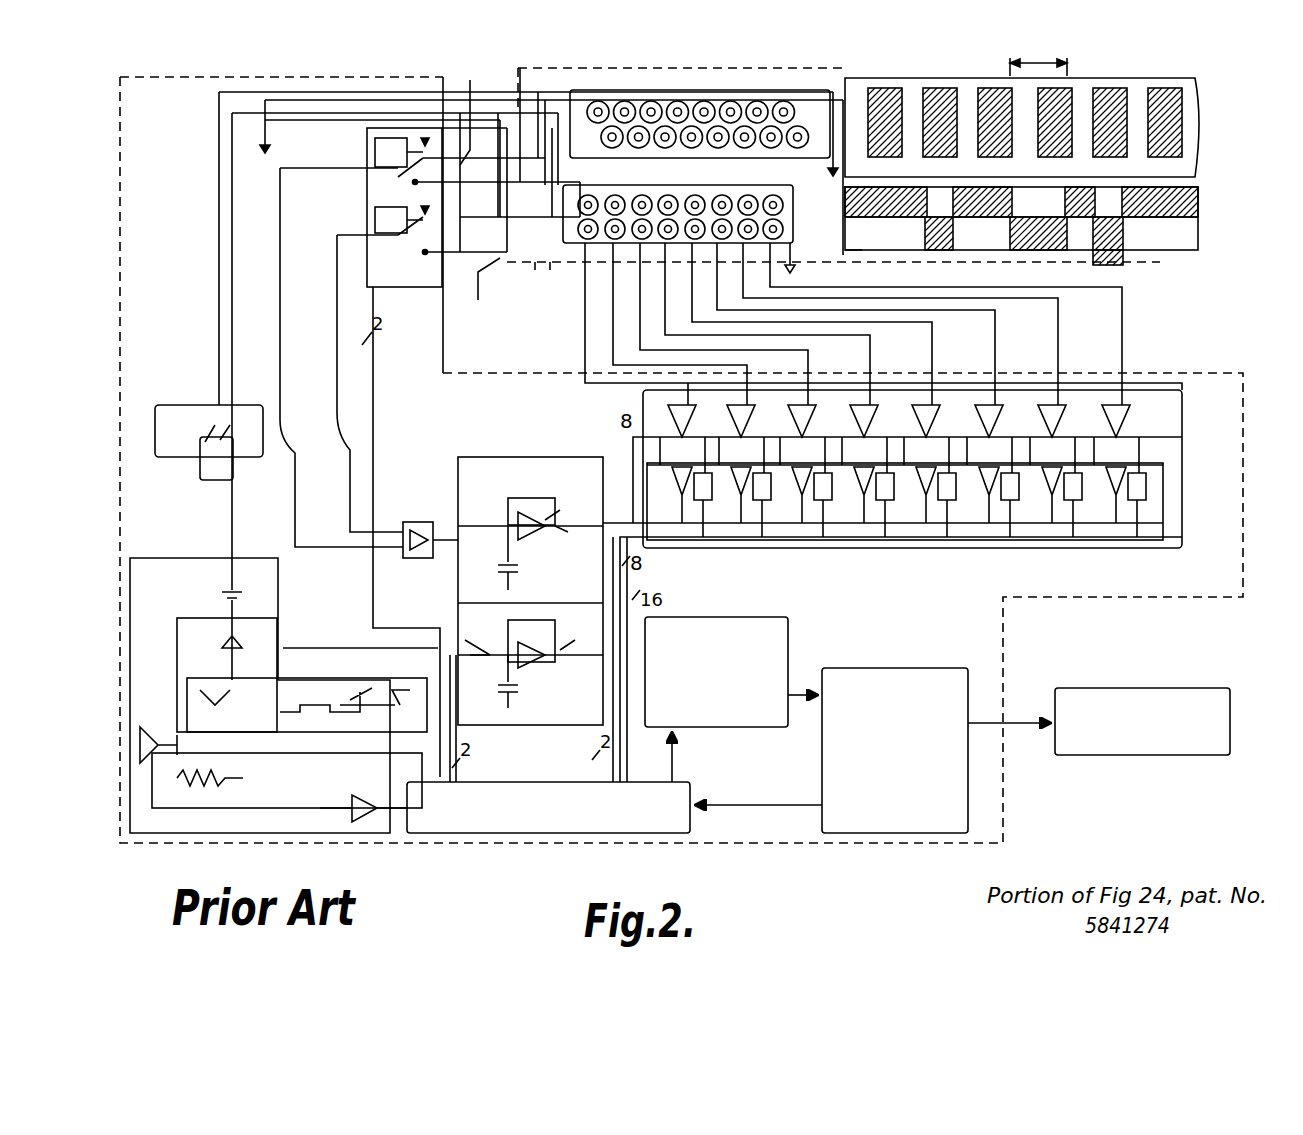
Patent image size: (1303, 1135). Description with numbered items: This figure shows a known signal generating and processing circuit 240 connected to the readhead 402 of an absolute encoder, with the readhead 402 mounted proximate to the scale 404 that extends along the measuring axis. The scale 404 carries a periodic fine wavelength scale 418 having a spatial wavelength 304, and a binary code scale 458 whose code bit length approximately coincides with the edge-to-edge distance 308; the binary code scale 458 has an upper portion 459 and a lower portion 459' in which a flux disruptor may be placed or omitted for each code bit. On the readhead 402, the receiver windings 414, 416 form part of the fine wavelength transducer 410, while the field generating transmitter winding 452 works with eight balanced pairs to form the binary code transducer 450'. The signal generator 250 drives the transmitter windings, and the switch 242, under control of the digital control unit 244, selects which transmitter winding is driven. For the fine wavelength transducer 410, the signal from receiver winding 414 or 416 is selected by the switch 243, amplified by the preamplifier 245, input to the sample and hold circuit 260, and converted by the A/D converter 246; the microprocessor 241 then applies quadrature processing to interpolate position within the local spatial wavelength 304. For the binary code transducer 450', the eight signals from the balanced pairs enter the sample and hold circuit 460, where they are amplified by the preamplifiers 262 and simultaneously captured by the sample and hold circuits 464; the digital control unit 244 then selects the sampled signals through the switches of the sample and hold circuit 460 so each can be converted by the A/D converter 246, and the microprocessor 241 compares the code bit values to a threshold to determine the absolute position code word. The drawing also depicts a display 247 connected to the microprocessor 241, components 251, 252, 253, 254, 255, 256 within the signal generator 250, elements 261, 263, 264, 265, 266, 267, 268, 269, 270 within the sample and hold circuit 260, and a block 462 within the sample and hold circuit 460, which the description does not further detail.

The signal generating and processing circuit 240 is at (1003, 600).
The microprocessor 241 is at (880, 668).
The switch 242 is at (190, 405).
The switch 243 is at (367, 158).
The digital control unit 244 is at (700, 800).
The preamplifier 245 is at (415, 522).
The A/D converter 246 is at (716, 617).
The display 247 is at (1125, 688).
The signal generator 250 is at (185, 558).
The battery 251 is at (222, 595).
The diode 252 is at (177, 645).
The resistor 253 is at (243, 778).
The diode 254 is at (172, 740).
The transistor switch 255 is at (270, 690).
The amplifier 256 is at (362, 795).
The sample and hold circuit 260 is at (555, 457).
The reference circuit 261 is at (508, 457).
The preamplifiers 262 is at (508, 512).
The capacitor 263 is at (520, 570).
The amplifier output 264 is at (545, 530).
The amplifier 265 is at (562, 512).
The control lines 266 is at (497, 718).
The switch 267 is at (470, 640).
The capacitor 268 is at (520, 695).
The amplifier 269 is at (545, 660).
The switch block 270 is at (555, 642).
The spatial wavelength 304 is at (1038, 63).
The edge-to-edge distance 308 is at (1112, 265).
The readhead 402 is at (550, 272).
The scale 404 is at (965, 250).
The fine wavelength transducer 410 is at (828, 84).
The receiver winding 414 is at (484, 266).
The receiver winding 416 is at (469, 110).
The fine wavelength scale 418 is at (1205, 116).
The binary code transducer 450' is at (743, 235).
The field generating transmitter winding 452 is at (535, 268).
The binary code scale 458 is at (1200, 217).
The upper portion 459 is at (1061, 194).
The lower portion 459' is at (1103, 246).
The sample and hold circuit 460 is at (1060, 548).
The comparator array 462 is at (1155, 398).
The sample and hold circuits 464 is at (1182, 470).